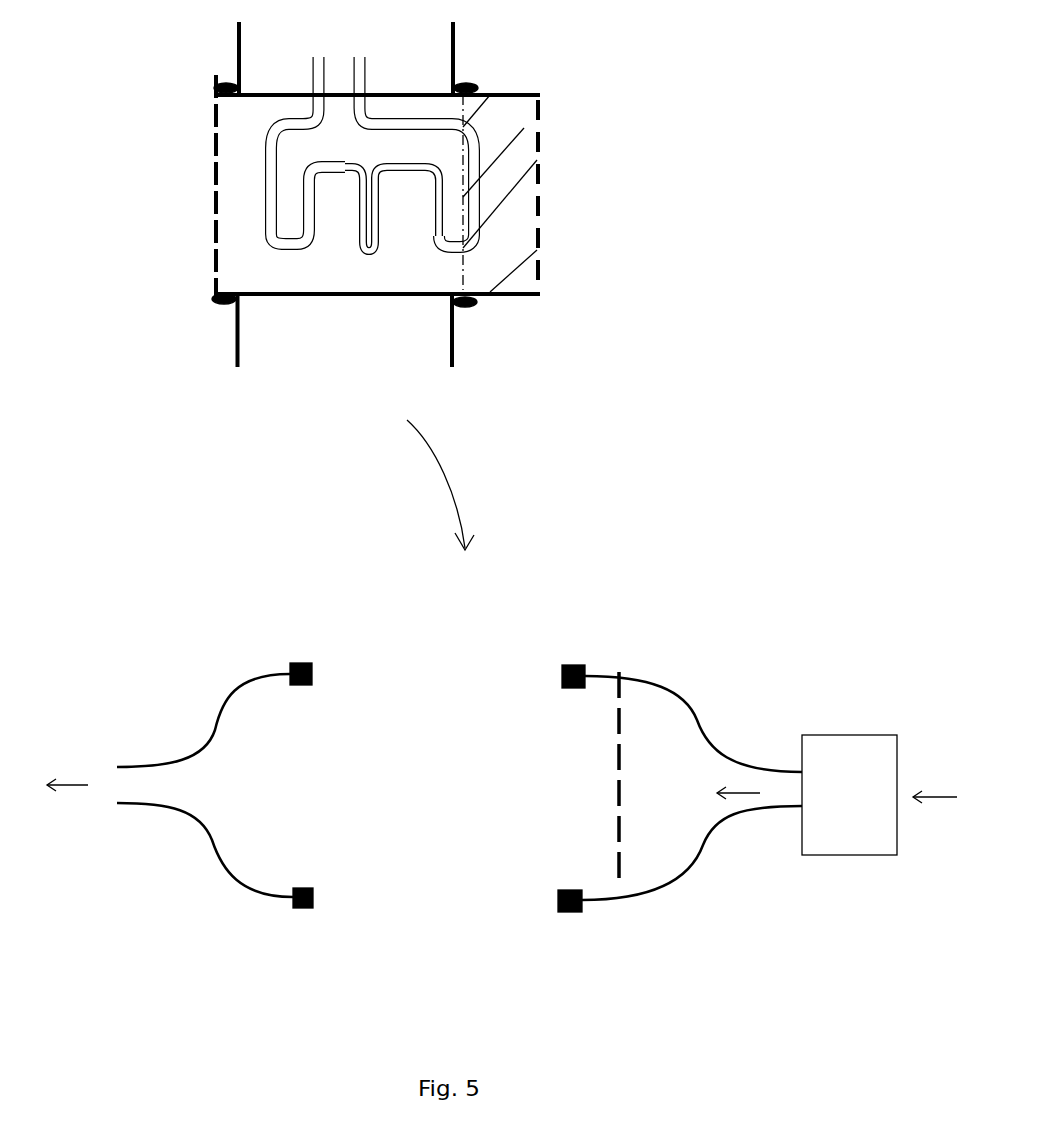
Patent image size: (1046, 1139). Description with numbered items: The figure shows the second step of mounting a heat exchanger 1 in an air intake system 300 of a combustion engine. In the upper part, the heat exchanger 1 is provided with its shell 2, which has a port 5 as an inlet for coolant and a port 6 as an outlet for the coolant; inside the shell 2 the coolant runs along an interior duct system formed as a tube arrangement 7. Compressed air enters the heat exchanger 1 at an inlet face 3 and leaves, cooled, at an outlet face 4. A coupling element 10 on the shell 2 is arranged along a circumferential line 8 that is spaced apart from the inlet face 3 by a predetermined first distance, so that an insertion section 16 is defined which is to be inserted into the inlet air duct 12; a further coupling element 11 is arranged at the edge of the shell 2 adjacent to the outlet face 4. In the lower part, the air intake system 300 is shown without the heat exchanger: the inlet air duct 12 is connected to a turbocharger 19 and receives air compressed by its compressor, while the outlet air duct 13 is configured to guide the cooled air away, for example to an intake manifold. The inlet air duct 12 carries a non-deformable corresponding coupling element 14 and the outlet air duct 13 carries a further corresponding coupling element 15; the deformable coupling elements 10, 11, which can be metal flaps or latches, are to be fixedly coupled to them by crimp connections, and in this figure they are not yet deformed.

The heat exchanger 1 is at (103, 63).
The shell 2 is at (377, 296).
The inlet face 3 is at (549, 139).
The outlet face 4 is at (204, 196).
The port 5 is at (366, 65).
The port 6 is at (313, 80).
The tube arrangement 7 is at (363, 248).
The circumferential line 8 is at (463, 258).
The coupling element 10 is at (454, 62).
The further coupling element 11 is at (238, 60).
The insertion section 16 is at (525, 128).
The air intake system 300 is at (134, 559).
The inlet air duct 12 is at (703, 735).
The outlet air duct 13 is at (217, 730).
The corresponding coupling element 14 is at (573, 665).
The further corresponding coupling element 15 is at (297, 663).
The turbocharger 19 is at (862, 804).